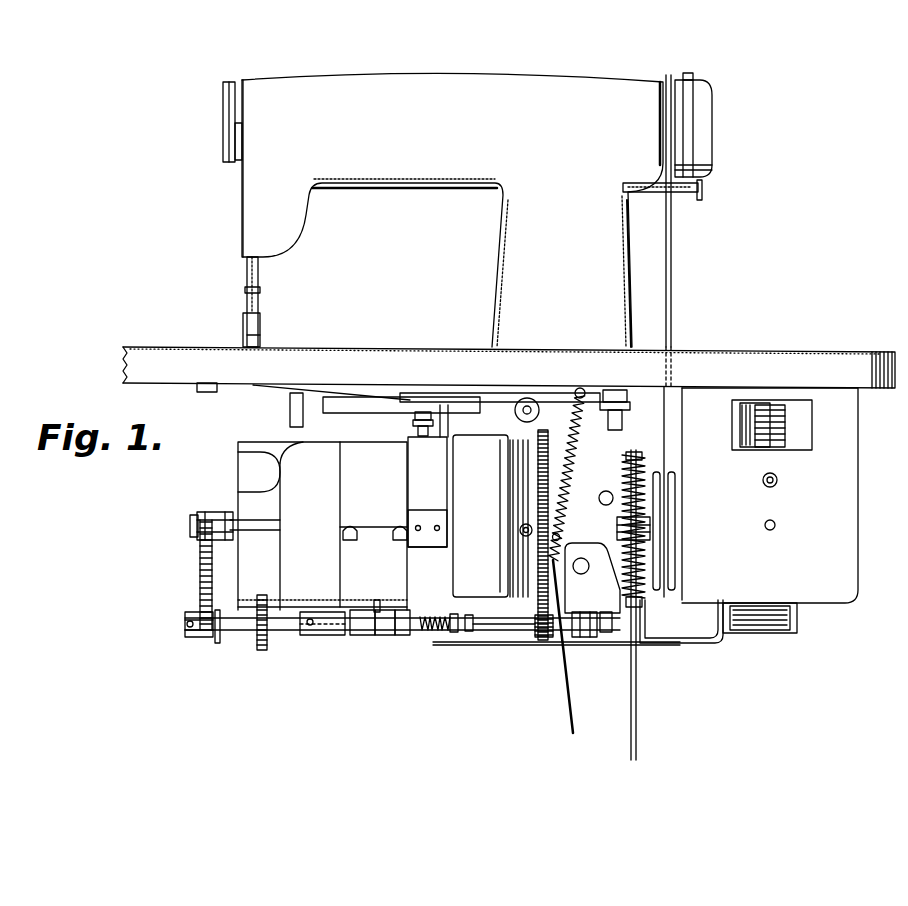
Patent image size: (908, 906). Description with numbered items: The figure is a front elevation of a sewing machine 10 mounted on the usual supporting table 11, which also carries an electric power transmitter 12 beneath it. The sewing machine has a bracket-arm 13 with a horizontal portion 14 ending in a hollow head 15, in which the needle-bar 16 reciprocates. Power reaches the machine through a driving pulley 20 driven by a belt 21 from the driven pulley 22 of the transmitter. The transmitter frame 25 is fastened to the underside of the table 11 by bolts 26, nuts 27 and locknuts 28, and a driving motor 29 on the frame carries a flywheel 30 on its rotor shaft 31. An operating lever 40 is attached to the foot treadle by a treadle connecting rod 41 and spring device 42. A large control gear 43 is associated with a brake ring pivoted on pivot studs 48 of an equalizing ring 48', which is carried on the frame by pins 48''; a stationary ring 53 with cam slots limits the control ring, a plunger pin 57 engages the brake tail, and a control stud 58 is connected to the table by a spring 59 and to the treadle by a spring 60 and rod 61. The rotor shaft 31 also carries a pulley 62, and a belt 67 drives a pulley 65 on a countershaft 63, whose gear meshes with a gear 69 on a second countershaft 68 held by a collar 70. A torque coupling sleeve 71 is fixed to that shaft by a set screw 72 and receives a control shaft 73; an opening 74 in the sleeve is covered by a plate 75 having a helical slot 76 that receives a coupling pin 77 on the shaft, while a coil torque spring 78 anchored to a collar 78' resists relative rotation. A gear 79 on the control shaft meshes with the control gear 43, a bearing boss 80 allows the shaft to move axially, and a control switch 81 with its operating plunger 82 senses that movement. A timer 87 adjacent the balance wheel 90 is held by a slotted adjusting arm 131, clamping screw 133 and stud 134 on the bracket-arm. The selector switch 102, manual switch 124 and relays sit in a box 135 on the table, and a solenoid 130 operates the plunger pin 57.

The sewing machine 10 is at (388, 74).
The supporting table 11 is at (780, 350).
The electric power transmitter 12 is at (236, 458).
The bracket-arm 13 is at (500, 290).
The horizontal portion 14 is at (410, 178).
The hollow head 15 is at (248, 228).
The needle-bar 16 is at (245, 298).
The driving pulley 20 is at (665, 82).
The belt 21 is at (673, 330).
The driven pulley 22 is at (676, 553).
The frame 25 is at (440, 437).
The bolts 26 is at (420, 436).
The nuts 27 is at (414, 416).
The locknuts 28 is at (414, 423).
The driving motor 29 is at (318, 520).
The flywheel 30 is at (500, 633).
The motor rotor shaft 31 is at (190, 526).
The operating lever 40 is at (648, 500).
The treadle connecting rod 41 is at (638, 725).
The spring device 42 is at (622, 520).
The control gear 43 is at (509, 575).
The pivot studs 48 is at (492, 516).
The equalizing ring 48' is at (500, 518).
The pins 48'' is at (516, 392).
The stationary ring 53 is at (550, 500).
The plunger pin 57 is at (660, 603).
The control stud 58 is at (560, 537).
The spring 59 is at (575, 458).
The spring 60 is at (568, 598).
The rod 61 is at (566, 716).
The pulley 62 is at (216, 512).
The countershaft 63 is at (186, 624).
The pulley 65 is at (190, 638).
The belt 67 is at (199, 572).
The second countershaft 68 is at (288, 632).
The gear 69 is at (258, 652).
The collar 70 is at (228, 640).
The torque coupling sleeve 71 is at (336, 636).
The set screw 72 is at (310, 635).
The control shaft 73 is at (470, 633).
The opening 74 is at (365, 636).
The plate 75 is at (383, 636).
The helical slot 76 is at (380, 597).
The coupling pin 77 is at (402, 636).
The coil torque spring 78 is at (433, 652).
The collar 78' is at (455, 648).
The gear 79 is at (542, 640).
The bearing boss 80 is at (585, 640).
The control switch 81 is at (634, 640).
The operating plunger 82 is at (607, 634).
The timer 87 is at (716, 97).
The sewing machine balance wheel 90 is at (690, 73).
The selector switch 102 is at (778, 480).
The manual switch 124 is at (775, 527).
The solenoid 130 is at (770, 634).
The adjusting arm 131 is at (700, 195).
The clamping screw 133 is at (703, 184).
The stud 134 is at (686, 200).
The box 135 is at (860, 566).